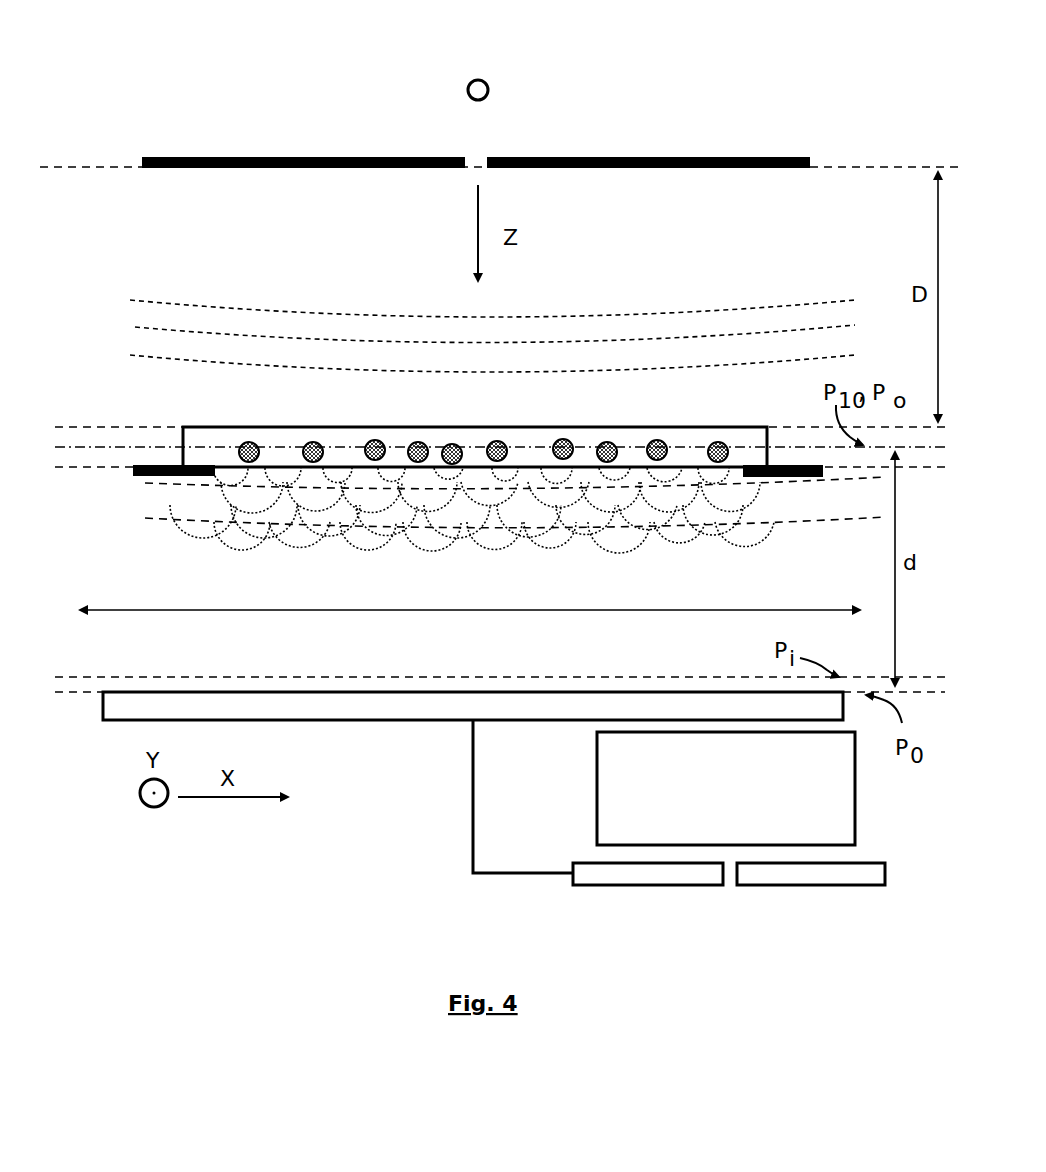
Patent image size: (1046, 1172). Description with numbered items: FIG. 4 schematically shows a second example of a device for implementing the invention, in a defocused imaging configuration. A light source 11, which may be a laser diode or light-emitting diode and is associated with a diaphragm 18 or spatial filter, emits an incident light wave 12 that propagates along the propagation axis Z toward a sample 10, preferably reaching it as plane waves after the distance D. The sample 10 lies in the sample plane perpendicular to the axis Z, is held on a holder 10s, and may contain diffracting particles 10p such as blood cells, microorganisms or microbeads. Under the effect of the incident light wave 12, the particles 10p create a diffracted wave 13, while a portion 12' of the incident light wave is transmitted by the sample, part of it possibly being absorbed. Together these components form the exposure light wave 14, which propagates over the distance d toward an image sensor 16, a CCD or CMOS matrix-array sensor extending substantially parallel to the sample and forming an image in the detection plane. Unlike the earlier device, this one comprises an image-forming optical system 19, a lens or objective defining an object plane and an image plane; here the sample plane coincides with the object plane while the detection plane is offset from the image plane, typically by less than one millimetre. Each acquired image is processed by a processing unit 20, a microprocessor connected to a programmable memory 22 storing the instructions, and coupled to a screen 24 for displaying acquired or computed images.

The sample 10 is at (180, 444).
The particles 10p is at (360, 438).
The holder 10s is at (170, 480).
The light source 11 is at (466, 83).
The incident light wave 12 is at (458, 331).
The transmitted portion of the incident light wave 12' is at (486, 518).
The diffracted wave 13 is at (374, 526).
The exposure light wave 14 is at (272, 562).
The image sensor 16 is at (526, 708).
The diaphragm 18 is at (814, 166).
The image-forming optical system 19 is at (481, 613).
The processing unit 20 is at (644, 880).
The programmable memory 22 is at (785, 880).
The screen 24 is at (834, 757).